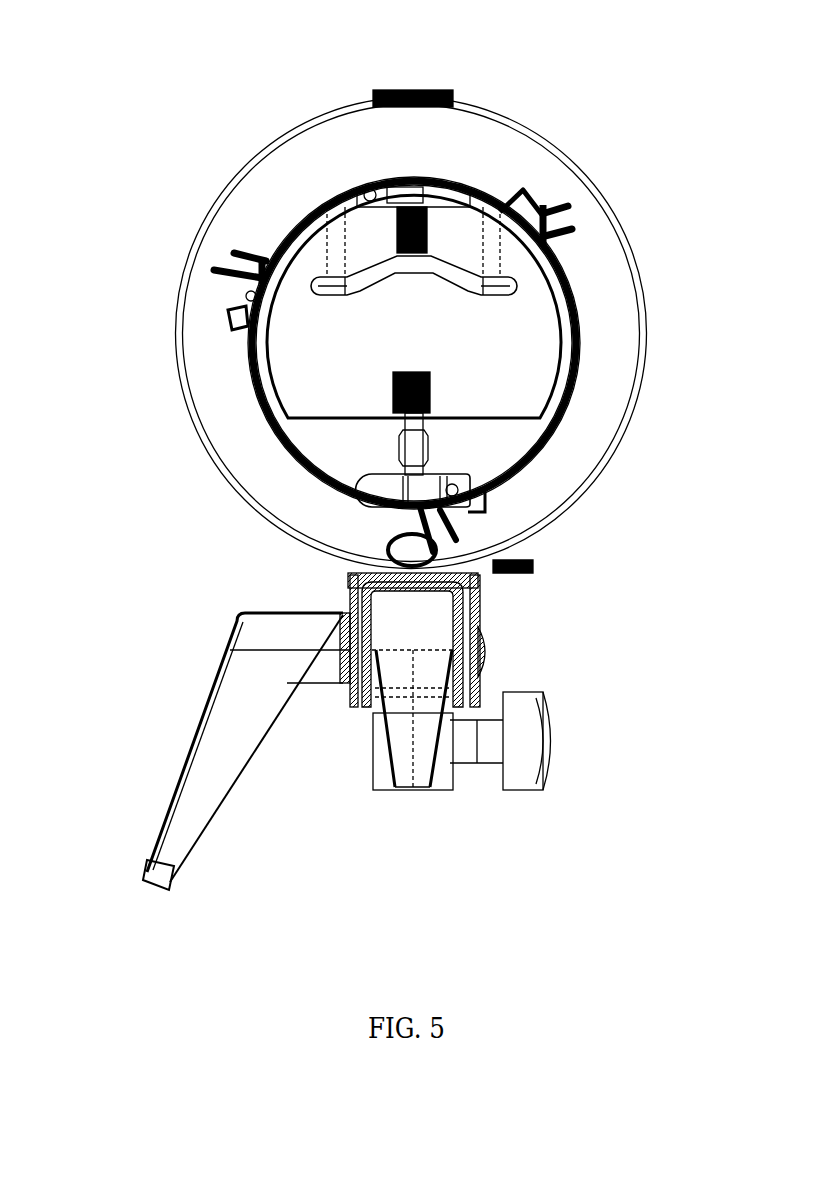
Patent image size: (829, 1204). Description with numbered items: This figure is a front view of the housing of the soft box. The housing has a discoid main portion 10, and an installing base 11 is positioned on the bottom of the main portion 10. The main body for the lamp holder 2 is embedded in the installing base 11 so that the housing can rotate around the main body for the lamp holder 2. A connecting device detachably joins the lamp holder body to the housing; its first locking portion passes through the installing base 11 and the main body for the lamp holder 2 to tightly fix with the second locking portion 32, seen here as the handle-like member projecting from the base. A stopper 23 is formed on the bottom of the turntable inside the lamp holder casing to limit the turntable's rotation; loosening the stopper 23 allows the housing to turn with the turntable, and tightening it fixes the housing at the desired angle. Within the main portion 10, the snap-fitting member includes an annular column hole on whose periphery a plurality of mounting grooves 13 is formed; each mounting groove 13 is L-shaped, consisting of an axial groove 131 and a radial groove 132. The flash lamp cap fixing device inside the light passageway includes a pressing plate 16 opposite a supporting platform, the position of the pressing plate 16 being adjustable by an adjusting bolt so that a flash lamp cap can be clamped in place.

The main portion 10 is at (600, 280).
The mounting groove 13 is at (242, 315).
The axial groove 131 is at (522, 210).
The radial groove 132 is at (540, 207).
The pressing plate 16 is at (382, 278).
The installing base 11 is at (437, 622).
The main body for lamp holder 2 is at (395, 732).
The stopper 23 is at (522, 750).
The second locking portion 32 is at (218, 723).